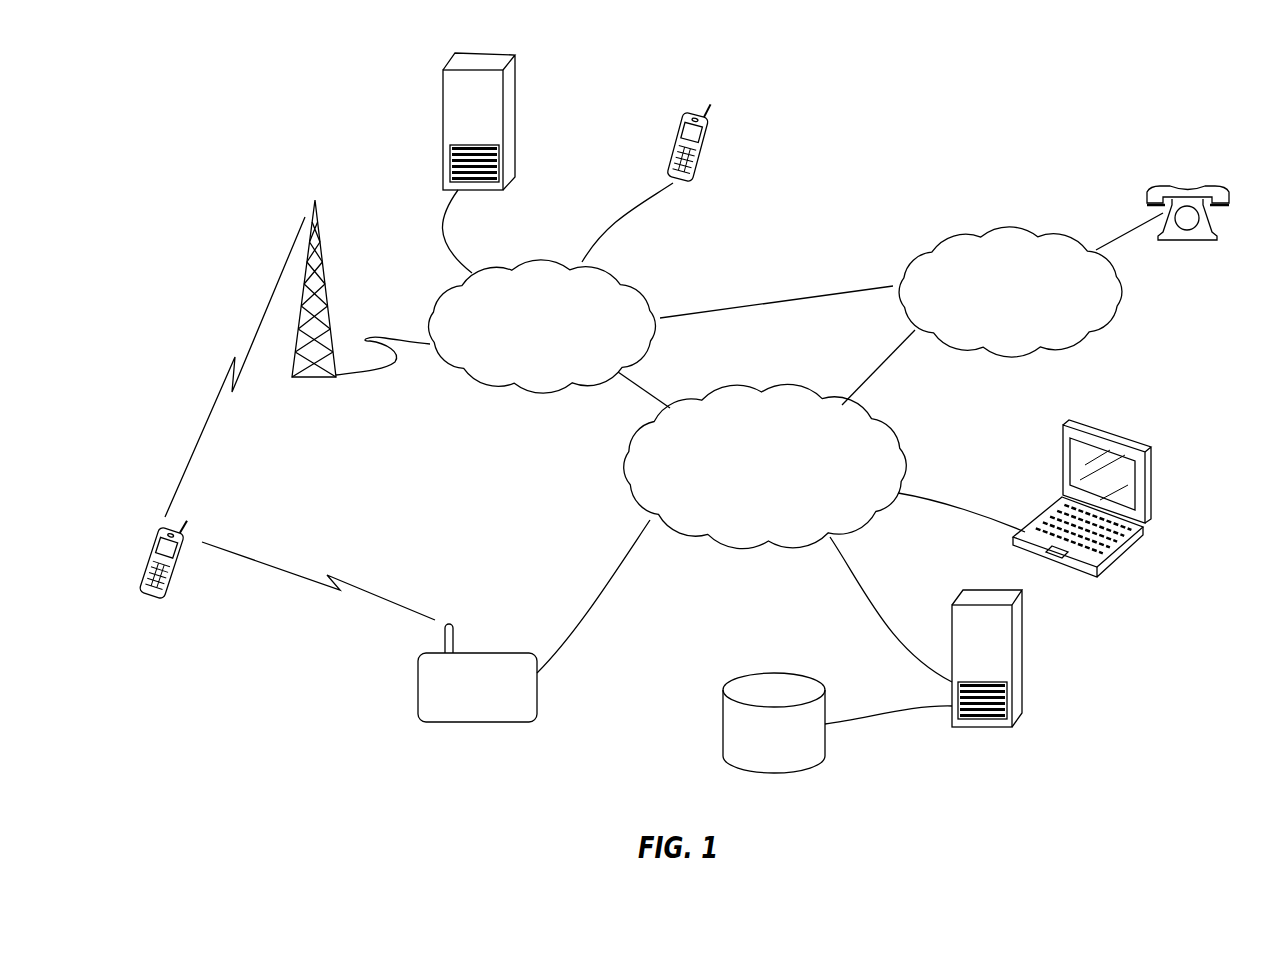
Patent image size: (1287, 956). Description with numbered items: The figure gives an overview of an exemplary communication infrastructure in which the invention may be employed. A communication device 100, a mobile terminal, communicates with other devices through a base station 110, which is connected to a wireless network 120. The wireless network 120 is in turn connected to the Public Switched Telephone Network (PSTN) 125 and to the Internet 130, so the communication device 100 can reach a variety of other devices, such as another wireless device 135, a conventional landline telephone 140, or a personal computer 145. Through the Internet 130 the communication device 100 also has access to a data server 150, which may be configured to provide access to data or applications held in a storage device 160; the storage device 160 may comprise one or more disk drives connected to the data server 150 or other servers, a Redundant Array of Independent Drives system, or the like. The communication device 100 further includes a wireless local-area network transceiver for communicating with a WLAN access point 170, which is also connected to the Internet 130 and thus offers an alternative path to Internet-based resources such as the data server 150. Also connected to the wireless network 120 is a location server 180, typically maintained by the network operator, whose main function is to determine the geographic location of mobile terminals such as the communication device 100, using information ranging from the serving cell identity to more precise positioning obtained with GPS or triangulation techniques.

The communication device 100 is at (170, 583).
The base station 110 is at (327, 300).
The wireless network 120 is at (562, 358).
The Public Switched Telephone Network (PSTN) 125 is at (1029, 312).
The Internet 130 is at (783, 490).
The wireless device 135 is at (700, 162).
The conventional landline telephone 140 is at (1195, 184).
The personal computer 145 is at (1145, 477).
The data server 150 is at (1022, 632).
The storage device 160 is at (826, 740).
The WLAN access point 170 is at (503, 722).
The location server 180 is at (515, 97).